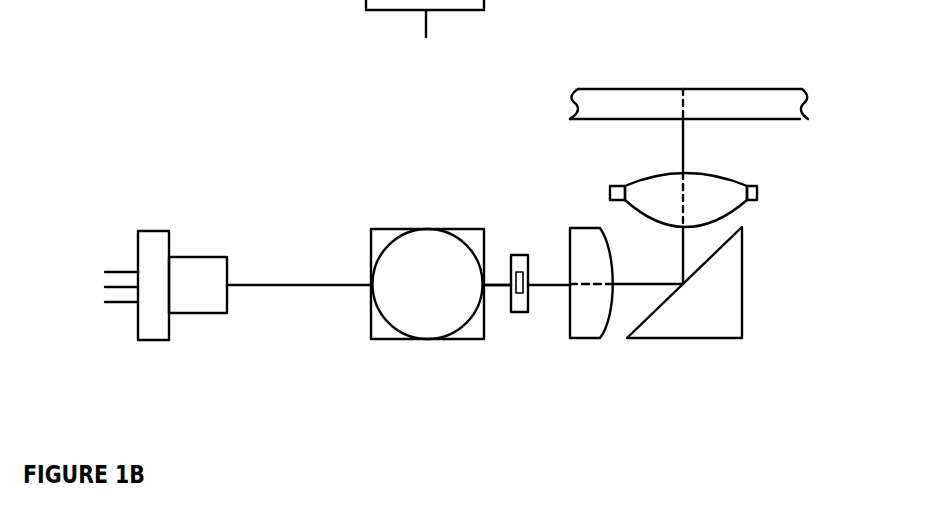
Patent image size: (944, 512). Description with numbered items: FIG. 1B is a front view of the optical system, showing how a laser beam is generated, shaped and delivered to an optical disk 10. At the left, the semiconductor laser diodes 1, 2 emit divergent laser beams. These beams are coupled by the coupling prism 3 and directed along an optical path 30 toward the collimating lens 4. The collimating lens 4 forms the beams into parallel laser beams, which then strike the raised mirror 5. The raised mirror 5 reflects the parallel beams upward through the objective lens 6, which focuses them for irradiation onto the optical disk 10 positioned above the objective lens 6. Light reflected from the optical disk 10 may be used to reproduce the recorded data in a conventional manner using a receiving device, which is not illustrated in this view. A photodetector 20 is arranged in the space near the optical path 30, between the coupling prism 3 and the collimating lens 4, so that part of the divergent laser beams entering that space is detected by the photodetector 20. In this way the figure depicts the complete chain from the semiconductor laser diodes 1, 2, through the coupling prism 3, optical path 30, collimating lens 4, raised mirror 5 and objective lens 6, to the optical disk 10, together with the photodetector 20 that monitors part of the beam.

The semiconductor laser diode 1 is at (150, 340).
The semiconductor laser diode 2 is at (413, 318).
The coupling prism 3 is at (387, 229).
The collimating lens 4 is at (583, 340).
The raised mirror 5 is at (745, 326).
The objective lens 6 is at (757, 193).
The optical disk 10 is at (760, 88).
The photodetector 20 is at (519, 255).
The optical path 30 is at (497, 287).